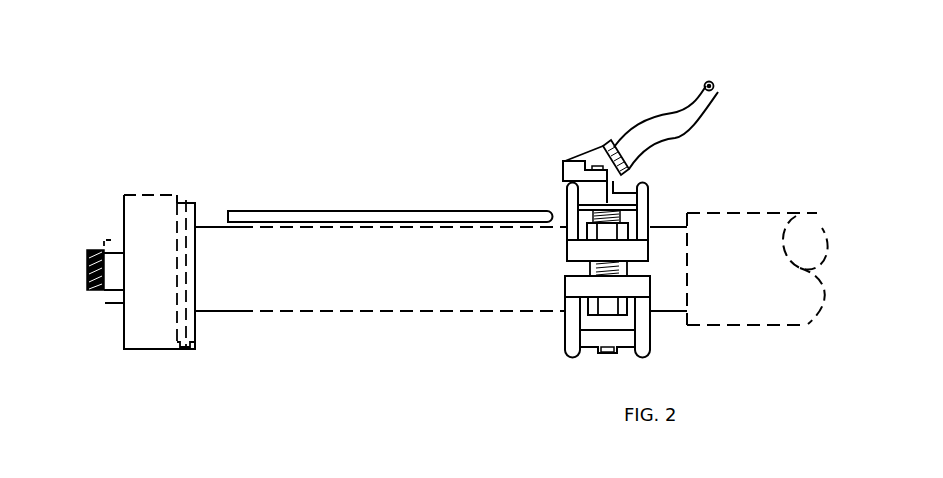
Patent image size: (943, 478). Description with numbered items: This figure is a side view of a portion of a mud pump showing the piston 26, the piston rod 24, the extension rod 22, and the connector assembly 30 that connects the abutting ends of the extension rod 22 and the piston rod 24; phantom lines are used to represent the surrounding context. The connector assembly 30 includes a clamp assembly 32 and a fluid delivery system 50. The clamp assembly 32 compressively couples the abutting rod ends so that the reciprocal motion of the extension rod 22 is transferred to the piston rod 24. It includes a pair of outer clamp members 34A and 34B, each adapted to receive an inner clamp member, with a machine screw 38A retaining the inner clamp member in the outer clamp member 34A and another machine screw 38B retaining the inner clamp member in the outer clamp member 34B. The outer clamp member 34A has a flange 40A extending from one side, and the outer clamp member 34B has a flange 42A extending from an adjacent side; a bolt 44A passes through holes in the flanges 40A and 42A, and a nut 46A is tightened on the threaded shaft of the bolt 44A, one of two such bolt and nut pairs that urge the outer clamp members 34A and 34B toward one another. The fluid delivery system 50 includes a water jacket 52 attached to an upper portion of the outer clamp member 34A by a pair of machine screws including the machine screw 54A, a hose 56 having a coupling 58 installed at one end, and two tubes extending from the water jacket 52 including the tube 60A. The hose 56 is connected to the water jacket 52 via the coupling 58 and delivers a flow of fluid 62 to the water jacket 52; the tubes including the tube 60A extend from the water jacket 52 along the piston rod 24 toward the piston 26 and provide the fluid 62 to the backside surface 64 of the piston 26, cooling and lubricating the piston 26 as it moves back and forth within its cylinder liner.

The extension rod 22 is at (763, 279).
The piston rod 24 is at (528, 279).
The piston 26 is at (163, 283).
The connector assembly 30 is at (572, 50).
The clamp assembly 32 is at (745, 150).
The outer clamp member 34A is at (652, 220).
The outer clamp member 34B is at (652, 323).
The machine screw 38A is at (613, 181).
The machine screw 38B is at (608, 355).
The flange 40A is at (652, 252).
The flange 42A is at (652, 287).
The bolt 44A is at (580, 310).
The nut 46A is at (583, 231).
The fluid delivery system 50 is at (546, 124).
The water jacket 52 is at (583, 160).
The machine screw 54A is at (563, 161).
The hose 56 is at (645, 118).
The coupling 58 is at (604, 141).
The tube 60A is at (342, 210).
The fluid 62 is at (200, 219).
The backside surface 64 is at (196, 203).